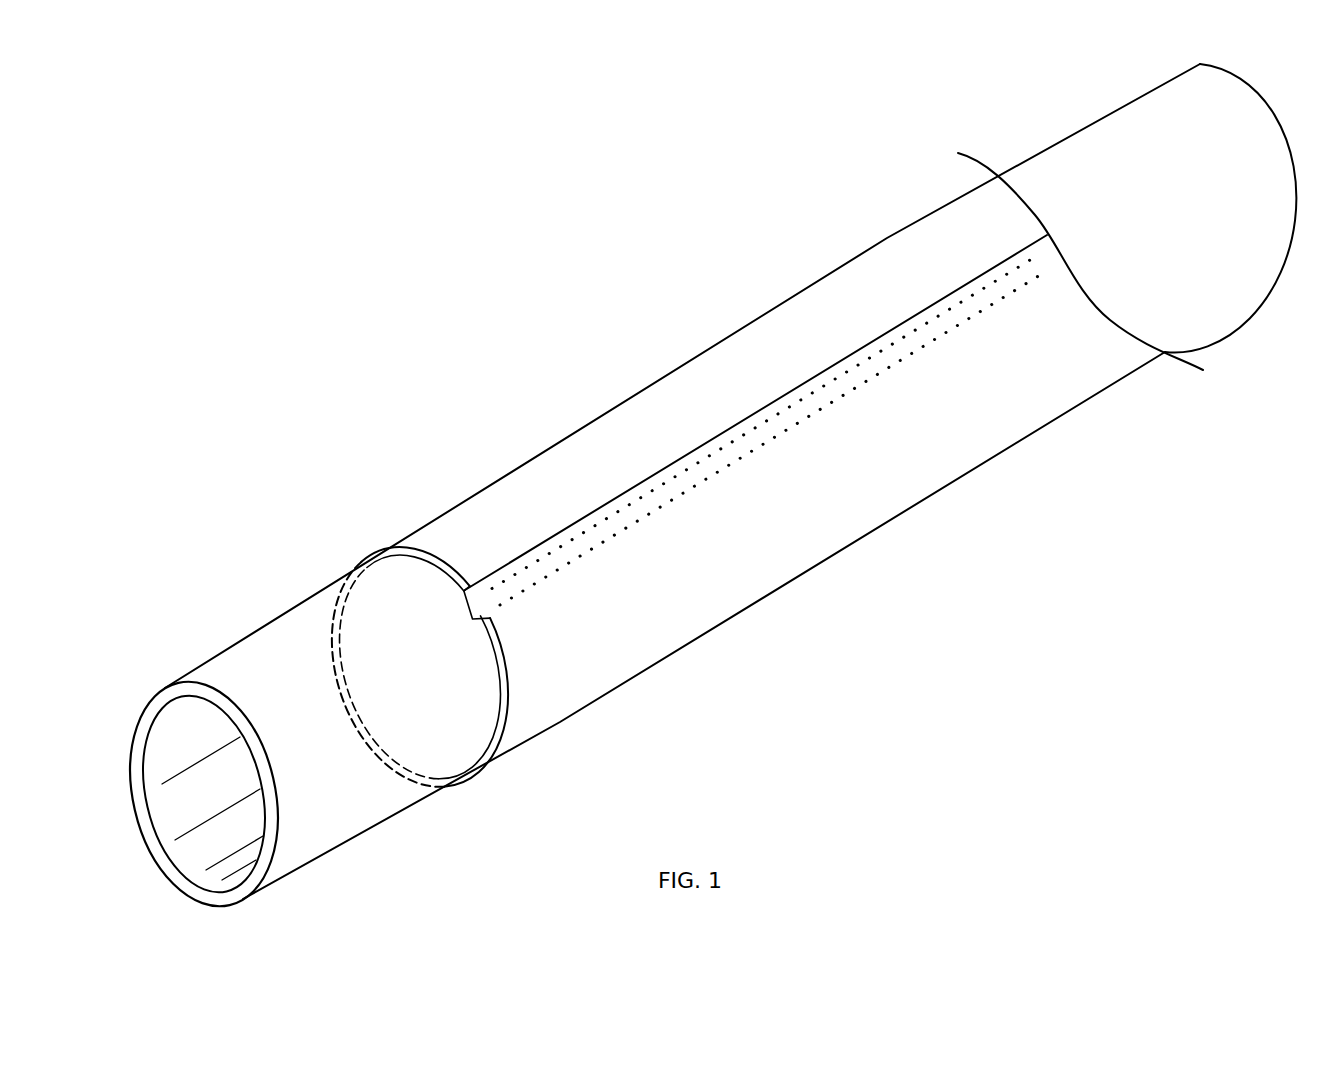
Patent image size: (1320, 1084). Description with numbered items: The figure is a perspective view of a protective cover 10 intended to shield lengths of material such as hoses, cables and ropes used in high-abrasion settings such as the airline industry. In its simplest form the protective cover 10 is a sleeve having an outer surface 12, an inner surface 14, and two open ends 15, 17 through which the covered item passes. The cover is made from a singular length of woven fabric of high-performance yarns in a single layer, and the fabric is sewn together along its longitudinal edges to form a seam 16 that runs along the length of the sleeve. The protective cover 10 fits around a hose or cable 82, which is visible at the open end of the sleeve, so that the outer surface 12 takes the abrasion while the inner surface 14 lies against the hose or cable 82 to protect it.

The protective cover 10 is at (640, 357).
The outer surface 12 is at (887, 277).
The inner surface 14 is at (465, 743).
The open end 15 is at (337, 658).
The seam 16 is at (597, 511).
The open end 17 is at (1023, 198).
The hose or cable 82 is at (165, 690).